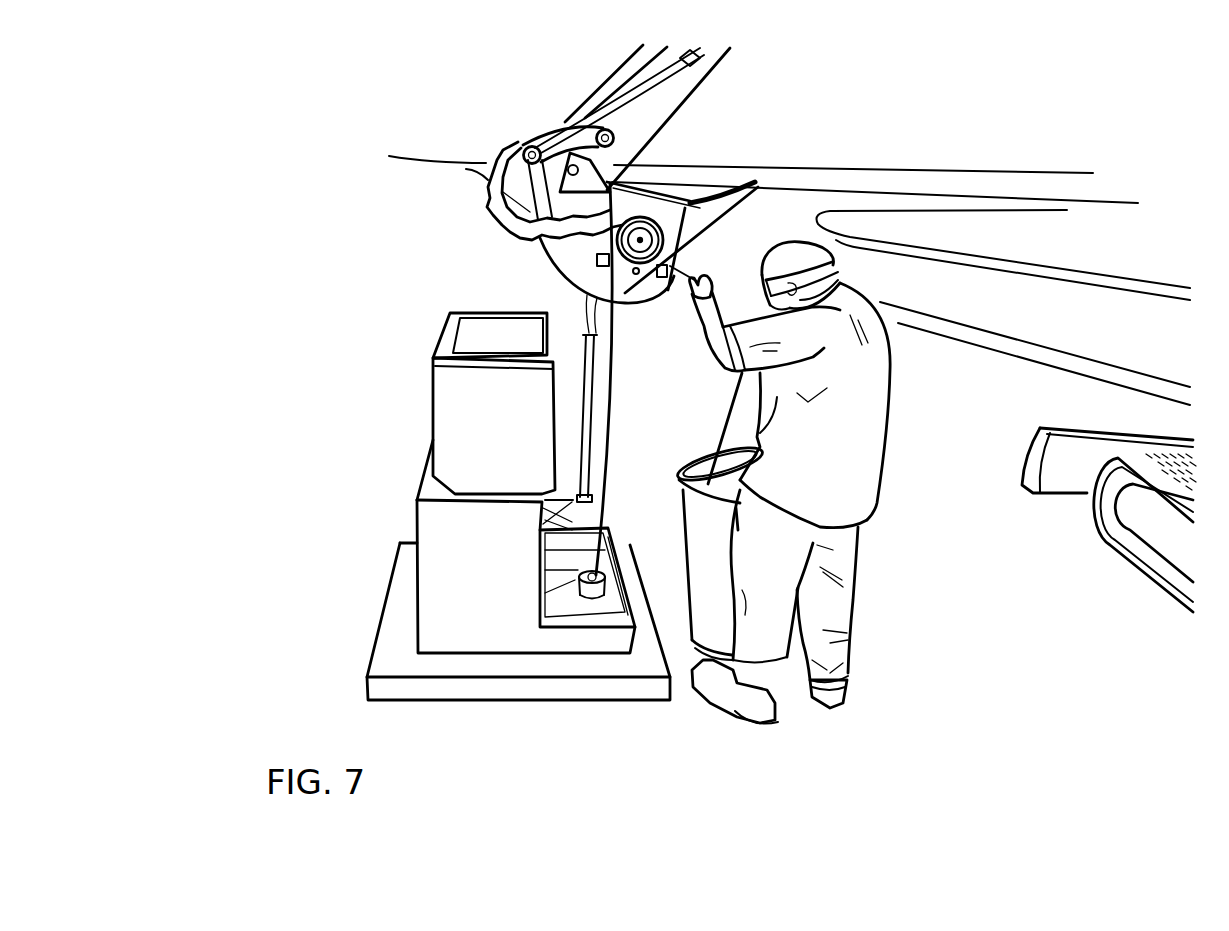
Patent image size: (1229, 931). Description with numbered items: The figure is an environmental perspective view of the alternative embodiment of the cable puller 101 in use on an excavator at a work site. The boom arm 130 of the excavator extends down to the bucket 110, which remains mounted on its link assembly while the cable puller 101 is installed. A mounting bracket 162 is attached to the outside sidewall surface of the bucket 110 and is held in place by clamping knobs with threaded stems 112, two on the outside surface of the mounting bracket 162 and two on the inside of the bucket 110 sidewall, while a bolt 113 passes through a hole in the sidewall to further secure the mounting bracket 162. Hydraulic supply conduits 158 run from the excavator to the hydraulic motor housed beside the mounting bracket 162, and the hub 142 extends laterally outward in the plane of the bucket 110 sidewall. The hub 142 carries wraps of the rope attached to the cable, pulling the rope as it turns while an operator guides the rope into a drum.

The cable puller 101 is at (684, 172).
The bucket 110 is at (577, 243).
The clamping knobs 112 is at (598, 260).
The bolt 113 is at (637, 274).
The boom arm 130 is at (675, 83).
The hub 142 is at (658, 232).
The hydraulic supply conduits 158 is at (540, 125).
The mounting bracket 162 is at (672, 215).